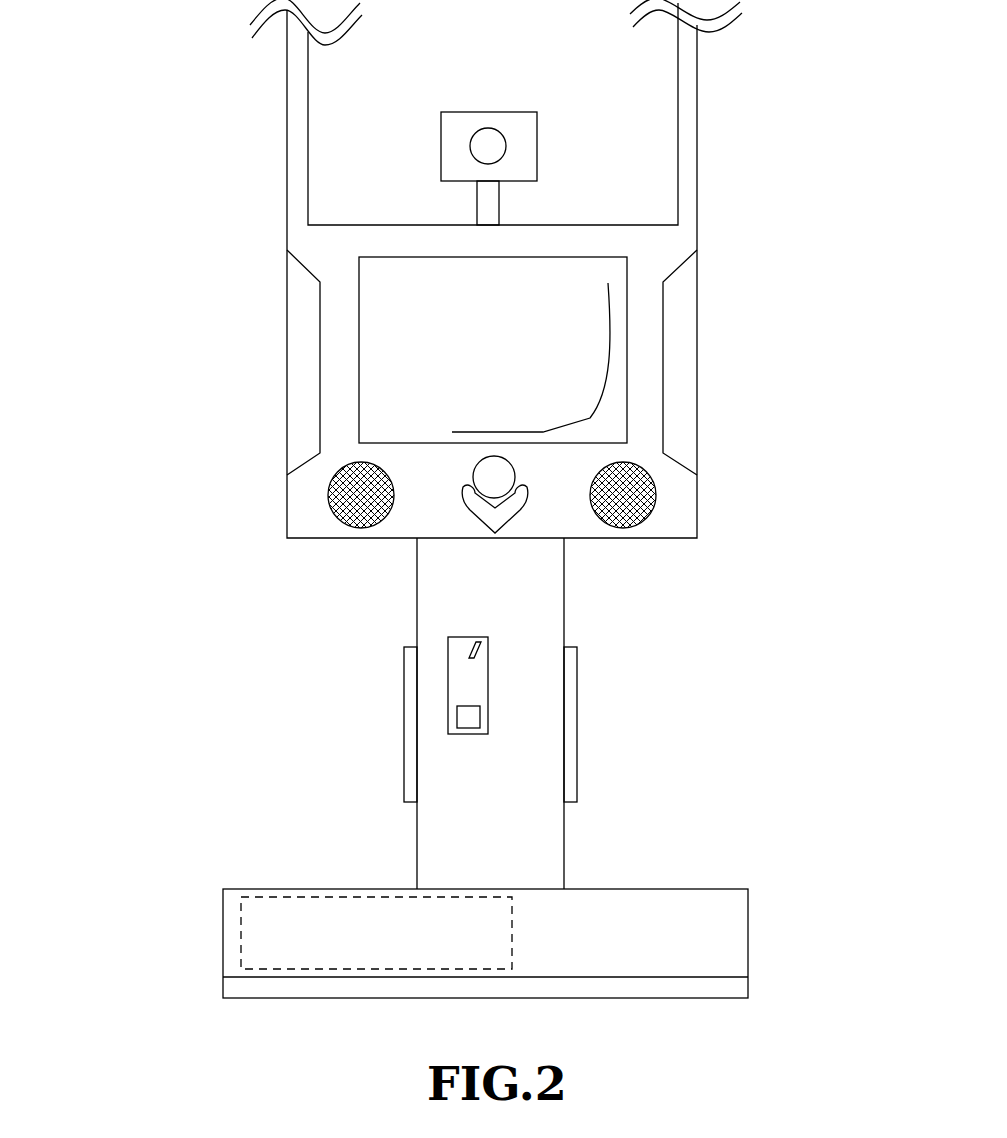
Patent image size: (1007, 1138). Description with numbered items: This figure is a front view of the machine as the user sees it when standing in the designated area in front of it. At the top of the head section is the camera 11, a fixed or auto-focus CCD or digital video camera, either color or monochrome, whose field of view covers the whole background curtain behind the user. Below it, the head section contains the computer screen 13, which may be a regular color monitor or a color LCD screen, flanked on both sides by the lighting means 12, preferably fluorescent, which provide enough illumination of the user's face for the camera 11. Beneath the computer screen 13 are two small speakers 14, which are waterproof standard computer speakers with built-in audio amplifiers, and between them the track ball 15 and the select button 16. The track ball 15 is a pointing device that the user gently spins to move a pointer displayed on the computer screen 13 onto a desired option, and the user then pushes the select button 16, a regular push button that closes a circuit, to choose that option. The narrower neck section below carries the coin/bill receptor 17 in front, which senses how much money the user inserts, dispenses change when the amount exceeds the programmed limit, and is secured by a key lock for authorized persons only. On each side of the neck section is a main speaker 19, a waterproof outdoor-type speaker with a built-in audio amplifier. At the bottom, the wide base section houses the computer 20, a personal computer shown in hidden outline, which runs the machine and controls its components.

The camera 11 is at (468, 121).
The lighting means 12 is at (305, 418).
The computer screen 13 is at (410, 367).
The small speakers 14 is at (345, 508).
The track ball 15 is at (497, 477).
The select button 16 is at (492, 517).
The coin/bill receptor 17 is at (467, 686).
The main speaker 19 is at (403, 772).
The computer 20 is at (282, 942).